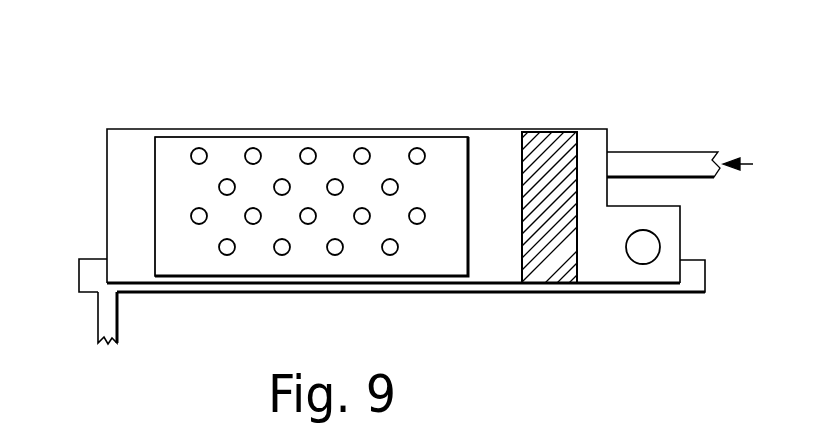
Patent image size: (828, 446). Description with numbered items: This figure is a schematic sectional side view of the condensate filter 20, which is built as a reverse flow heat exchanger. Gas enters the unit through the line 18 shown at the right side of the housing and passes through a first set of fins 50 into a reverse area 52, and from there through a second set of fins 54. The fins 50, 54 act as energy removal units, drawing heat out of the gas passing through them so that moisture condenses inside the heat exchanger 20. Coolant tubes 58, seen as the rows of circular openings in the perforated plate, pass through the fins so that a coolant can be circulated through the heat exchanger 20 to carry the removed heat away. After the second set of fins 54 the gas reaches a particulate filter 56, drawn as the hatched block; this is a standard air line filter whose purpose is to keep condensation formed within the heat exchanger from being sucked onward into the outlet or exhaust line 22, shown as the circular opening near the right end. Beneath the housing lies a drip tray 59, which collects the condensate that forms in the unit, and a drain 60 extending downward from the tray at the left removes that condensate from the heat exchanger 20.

The condensate filter 20 is at (513, 50).
The first set of fins 50 is at (173, 145).
The second set of fins 54 is at (311, 206).
The coolant tubes 58 is at (362, 148).
The reverse area 52 is at (107, 217).
The particulate filter 56 is at (553, 137).
The inlet tube 18 is at (650, 152).
The outlet or exhaust line 22 is at (650, 246).
The drip tray 59 is at (700, 278).
The drain 60 is at (110, 320).